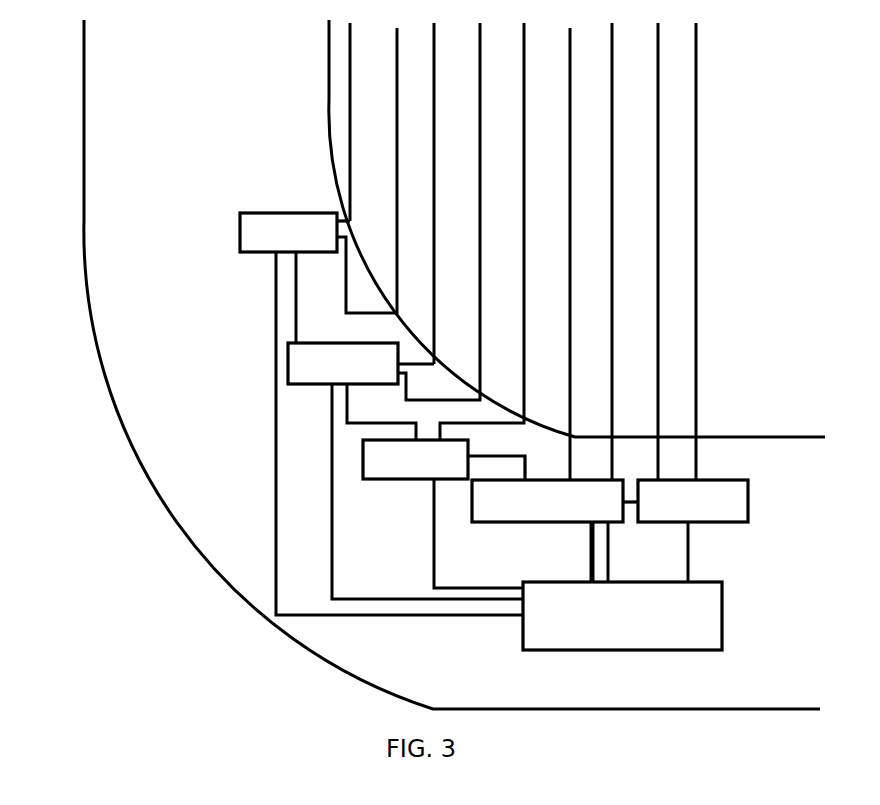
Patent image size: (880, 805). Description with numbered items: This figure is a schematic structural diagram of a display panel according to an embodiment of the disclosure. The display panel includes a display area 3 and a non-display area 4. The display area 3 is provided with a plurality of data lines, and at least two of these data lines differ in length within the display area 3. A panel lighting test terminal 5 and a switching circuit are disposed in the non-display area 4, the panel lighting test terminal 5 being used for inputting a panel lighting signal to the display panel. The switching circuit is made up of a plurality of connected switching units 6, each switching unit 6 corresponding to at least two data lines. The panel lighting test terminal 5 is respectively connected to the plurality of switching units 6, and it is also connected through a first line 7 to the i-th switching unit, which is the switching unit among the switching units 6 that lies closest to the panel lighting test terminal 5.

The display area 3 is at (376, 92).
The non-display area 4 is at (100, 117).
The panel lighting test terminal 5 is at (552, 580).
The switching unit 6 is at (290, 215).
The first line 7 is at (587, 565).